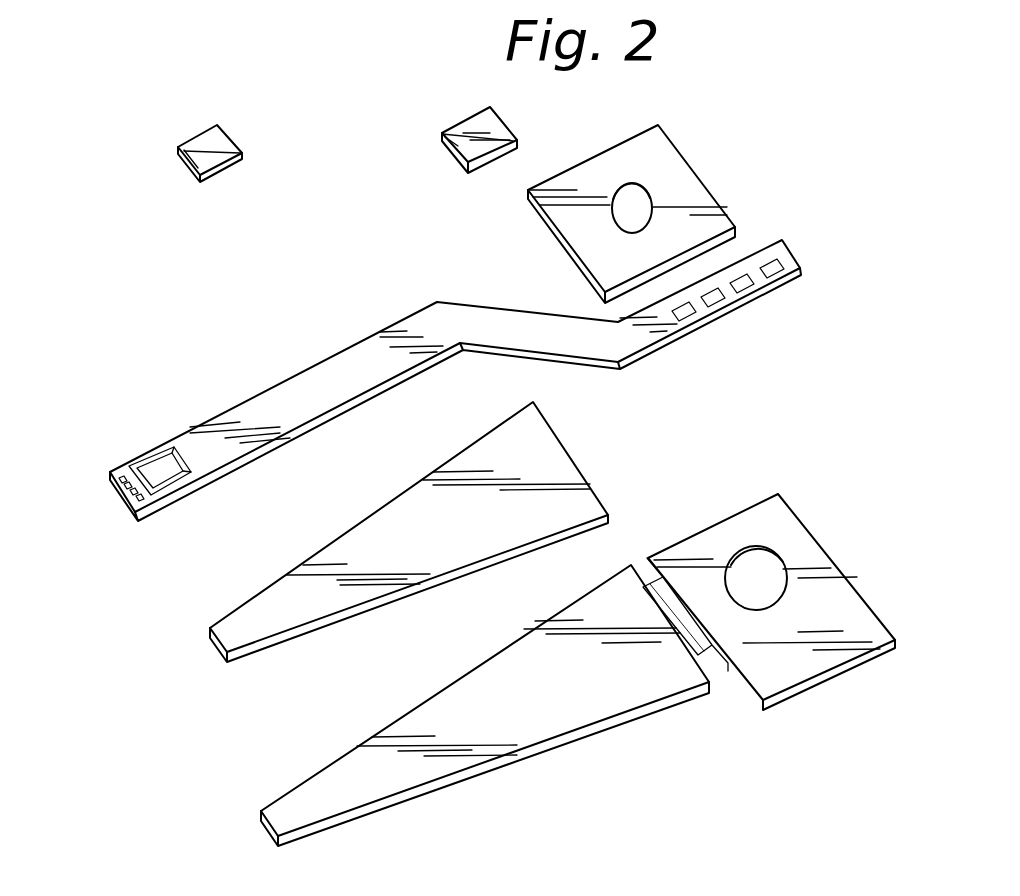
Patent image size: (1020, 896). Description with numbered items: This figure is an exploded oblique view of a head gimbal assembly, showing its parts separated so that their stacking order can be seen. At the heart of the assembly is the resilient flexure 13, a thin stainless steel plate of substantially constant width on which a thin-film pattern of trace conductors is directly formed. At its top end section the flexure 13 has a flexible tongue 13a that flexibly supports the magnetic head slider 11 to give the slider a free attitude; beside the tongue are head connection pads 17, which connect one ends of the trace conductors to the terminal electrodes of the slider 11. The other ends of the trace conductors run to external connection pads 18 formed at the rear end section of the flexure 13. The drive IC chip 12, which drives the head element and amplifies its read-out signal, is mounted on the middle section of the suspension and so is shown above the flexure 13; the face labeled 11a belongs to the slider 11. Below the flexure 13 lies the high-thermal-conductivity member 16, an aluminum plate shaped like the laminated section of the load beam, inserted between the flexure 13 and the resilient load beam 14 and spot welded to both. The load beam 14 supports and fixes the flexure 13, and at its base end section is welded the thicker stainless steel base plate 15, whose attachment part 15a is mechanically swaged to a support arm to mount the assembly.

The magnetic head slider 11 is at (238, 215).
The block surface 11a is at (190, 165).
The drive IC chip 12 is at (443, 147).
The flexure 13 is at (431, 388).
The flexible tongue 13a is at (153, 474).
The load beam 14 is at (607, 704).
The base plate 15 is at (646, 199).
The attachment part 15a is at (622, 195).
The high-thermal-conductivity member 16 is at (548, 443).
The head connection pads 17 is at (139, 502).
The external connection pads 18 is at (777, 270).